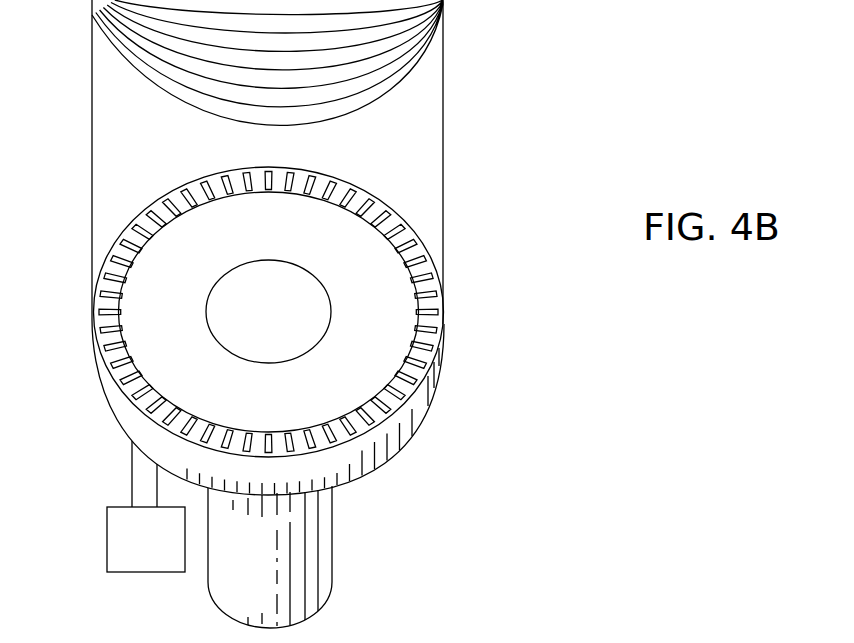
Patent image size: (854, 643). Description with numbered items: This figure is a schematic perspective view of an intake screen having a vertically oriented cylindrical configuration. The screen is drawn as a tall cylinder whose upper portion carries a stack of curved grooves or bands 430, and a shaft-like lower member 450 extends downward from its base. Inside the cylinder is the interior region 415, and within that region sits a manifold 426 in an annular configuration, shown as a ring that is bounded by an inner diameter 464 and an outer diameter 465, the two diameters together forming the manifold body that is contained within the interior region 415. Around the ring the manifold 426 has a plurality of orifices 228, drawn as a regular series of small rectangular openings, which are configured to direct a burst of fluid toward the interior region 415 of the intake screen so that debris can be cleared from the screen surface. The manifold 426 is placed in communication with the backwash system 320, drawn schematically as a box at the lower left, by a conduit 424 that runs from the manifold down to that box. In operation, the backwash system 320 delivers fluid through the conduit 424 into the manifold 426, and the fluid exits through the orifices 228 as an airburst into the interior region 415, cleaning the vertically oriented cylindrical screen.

The interior region 415 is at (154, 162).
The grooves 430 is at (430, 22).
The orifices 228 is at (428, 310).
The inner diameter 464 is at (144, 377).
The outer diameter 465 is at (437, 367).
The manifold 426 is at (418, 414).
The conduit 424 is at (133, 473).
The backwash system 320 is at (168, 550).
The shaft 450 is at (333, 537).